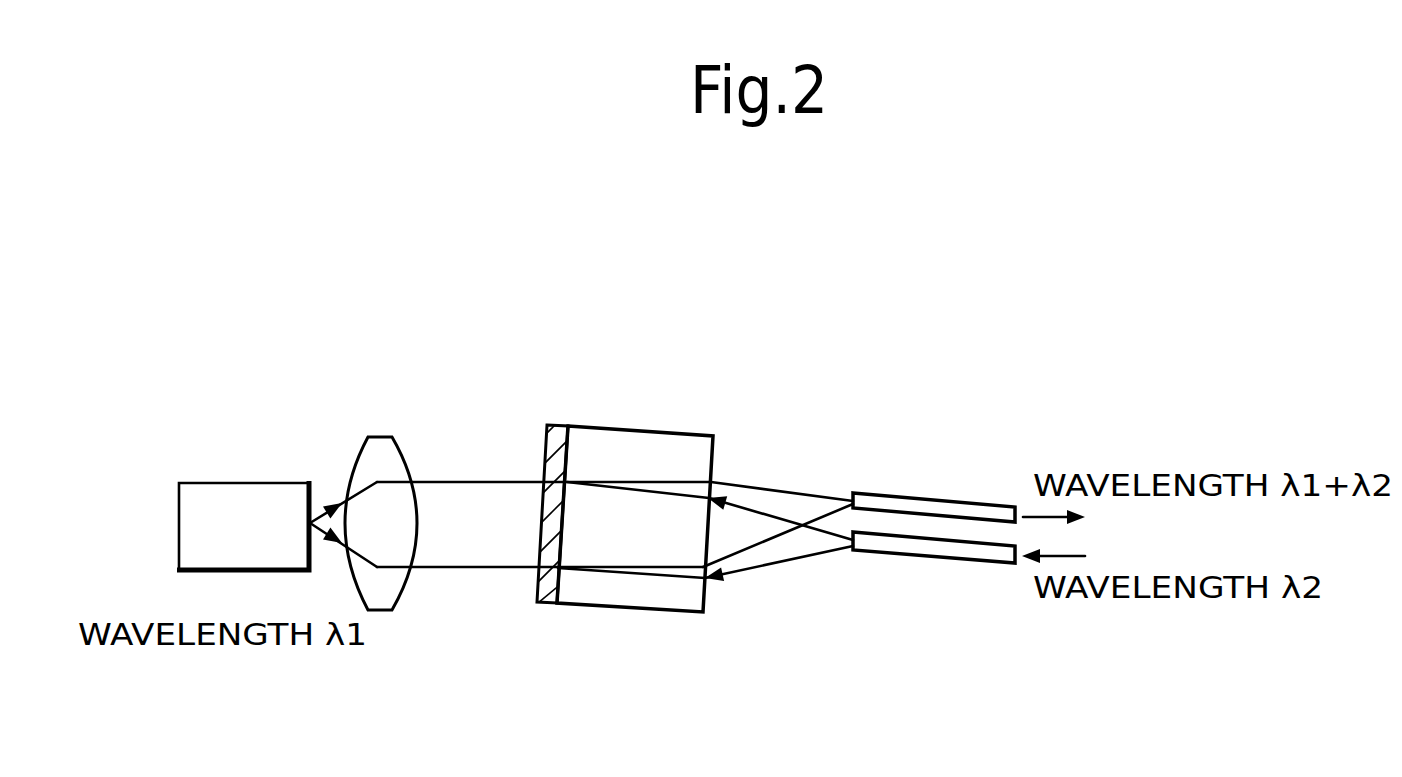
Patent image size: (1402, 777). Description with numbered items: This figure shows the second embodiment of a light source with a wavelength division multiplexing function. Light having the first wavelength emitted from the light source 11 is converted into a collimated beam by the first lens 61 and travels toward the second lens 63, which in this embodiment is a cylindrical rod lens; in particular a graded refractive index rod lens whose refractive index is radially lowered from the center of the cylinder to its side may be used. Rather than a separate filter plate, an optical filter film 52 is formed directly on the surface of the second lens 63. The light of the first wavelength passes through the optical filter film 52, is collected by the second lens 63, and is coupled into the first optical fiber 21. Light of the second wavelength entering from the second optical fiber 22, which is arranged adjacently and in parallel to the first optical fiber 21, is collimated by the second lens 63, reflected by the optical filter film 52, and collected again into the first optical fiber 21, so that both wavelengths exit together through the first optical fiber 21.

The light source 11 is at (212, 482).
The first lens 61 is at (390, 505).
The optical filter film 52 is at (638, 430).
The second lens 63 is at (635, 545).
The first optical fiber 21 is at (920, 493).
The second optical fiber 22 is at (917, 557).